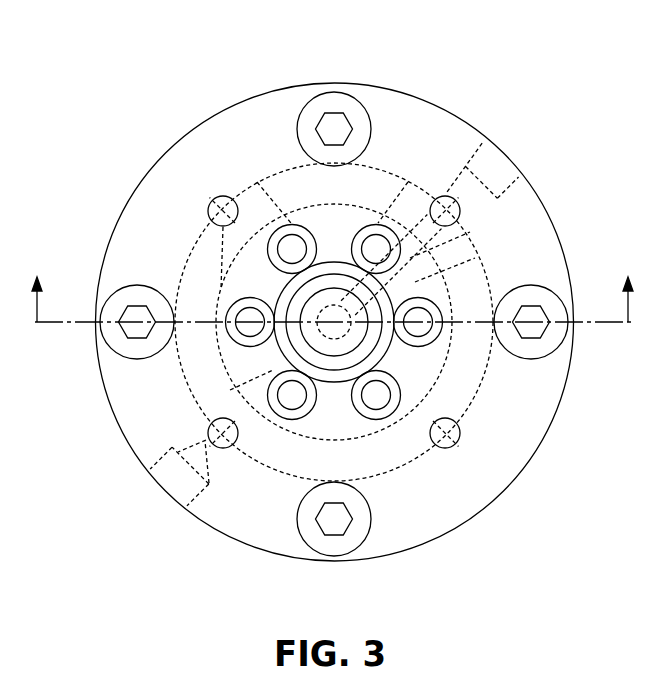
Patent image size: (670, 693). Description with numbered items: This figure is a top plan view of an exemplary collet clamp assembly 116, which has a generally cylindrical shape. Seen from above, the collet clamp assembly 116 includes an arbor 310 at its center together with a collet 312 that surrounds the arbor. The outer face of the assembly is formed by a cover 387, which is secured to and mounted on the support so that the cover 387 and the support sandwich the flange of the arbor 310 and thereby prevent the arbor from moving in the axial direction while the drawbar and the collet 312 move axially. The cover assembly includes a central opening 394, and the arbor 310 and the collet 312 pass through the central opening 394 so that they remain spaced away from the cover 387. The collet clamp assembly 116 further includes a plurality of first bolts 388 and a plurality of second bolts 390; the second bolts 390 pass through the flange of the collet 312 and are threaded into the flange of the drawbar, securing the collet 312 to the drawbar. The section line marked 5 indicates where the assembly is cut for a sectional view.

The collet clamp assembly 116 is at (516, 153).
The cover 387 is at (540, 263).
The central opening 394 is at (365, 472).
The section line 5- 5 is at (332, 287).
The first bolts 388 is at (334, 92).
The second bolts 390 is at (257, 182).
The collet 312 is at (270, 293).
The arbor 310 is at (333, 368).